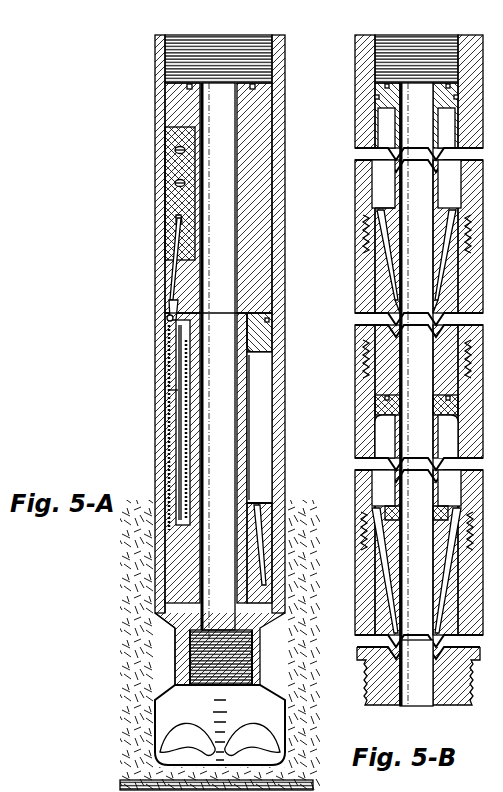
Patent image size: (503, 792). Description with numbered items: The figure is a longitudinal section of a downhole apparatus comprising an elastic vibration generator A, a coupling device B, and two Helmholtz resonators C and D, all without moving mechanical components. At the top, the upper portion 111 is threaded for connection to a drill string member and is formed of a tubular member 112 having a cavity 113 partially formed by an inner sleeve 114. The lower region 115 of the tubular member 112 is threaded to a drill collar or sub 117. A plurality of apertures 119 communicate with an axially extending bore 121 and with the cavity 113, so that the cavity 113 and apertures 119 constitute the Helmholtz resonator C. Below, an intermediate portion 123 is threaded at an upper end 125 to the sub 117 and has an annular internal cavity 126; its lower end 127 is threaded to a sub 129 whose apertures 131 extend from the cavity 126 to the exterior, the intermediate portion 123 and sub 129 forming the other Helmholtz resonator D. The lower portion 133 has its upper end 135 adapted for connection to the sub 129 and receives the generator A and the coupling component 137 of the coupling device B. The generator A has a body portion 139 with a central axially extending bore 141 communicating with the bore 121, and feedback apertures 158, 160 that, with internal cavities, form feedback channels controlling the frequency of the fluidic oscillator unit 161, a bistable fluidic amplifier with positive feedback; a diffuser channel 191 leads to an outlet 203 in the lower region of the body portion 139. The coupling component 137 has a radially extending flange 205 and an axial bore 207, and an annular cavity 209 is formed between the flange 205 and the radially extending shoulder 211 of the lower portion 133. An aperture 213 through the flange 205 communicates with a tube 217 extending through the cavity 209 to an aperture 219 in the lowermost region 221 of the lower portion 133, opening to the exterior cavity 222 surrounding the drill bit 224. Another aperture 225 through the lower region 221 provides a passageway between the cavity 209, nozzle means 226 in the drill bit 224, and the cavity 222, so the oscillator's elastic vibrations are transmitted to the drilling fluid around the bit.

In FIG. 5-A, the upper end 135 is at (168, 38).
In FIG. 5-A, the central axially extending bore 141 is at (222, 100).
In FIG. 5-A, the lower portion 133 is at (163, 88).
In FIG. 5-A, the body portion 139 is at (182, 106).
In FIG. 5-A, the elastic vibration generator A is at (170, 117).
In FIG. 5-A, the aperture 158 is at (176, 150).
In FIG. 5-A, the aperture 160 is at (176, 183).
In FIG. 5-A, the fluidic oscillator unit 161 is at (176, 212).
In FIG. 5-A, the diffuser channel 191 is at (175, 248).
In FIG. 5-A, the outlet 203 is at (172, 292).
In FIG. 5-A, the aperture 213 is at (170, 318).
In FIG. 5-A, the tube 217 is at (180, 369).
In FIG. 5-A, the coupling device B is at (176, 390).
In FIG. 5-A, the axial bore 207 is at (184, 422).
In FIG. 5-A, the coupling component 137 is at (186, 465).
In FIG. 5-A, the nozzle means 226 is at (268, 324).
In FIG. 5-A, the radially extending flange 205 is at (260, 345).
In FIG. 5-A, the annular cavity 209 is at (262, 400).
In FIG. 5-A, the radially extending shoulder 211 is at (260, 502).
In FIG. 5-A, the aperture 225 is at (265, 525).
In FIG. 5-A, the axially extending bore 121 is at (215, 575).
In FIG. 5-B, the axially extending bore 121 is at (420, 115).
In FIG. 5-A, the aperture 219 is at (180, 586).
In FIG. 5-A, the lowermost region 221 is at (172, 612).
In FIG. 5-A, the exterior cavity 222 is at (166, 655).
In FIG. 5-A, the drill bit 224 is at (182, 708).
In FIG. 5-B, the upper portion 111 is at (375, 42).
In FIG. 5-B, the tubular member 112 is at (365, 88).
In FIG. 5-B, the cavity 113 is at (380, 130).
In FIG. 5-B, the inner sleeve 114 is at (398, 162).
In FIG. 5-B, the Helmholtz resonator C is at (380, 185).
In FIG. 5-B, the lower region 115 is at (372, 222).
In FIG. 5-B, the drill collar or sub 117 is at (374, 278).
In FIG. 5-B, the apertures 119 is at (380, 295).
In FIG. 5-B, the upper end 125 is at (376, 365).
In FIG. 5-B, the intermediate portion 123 is at (374, 412).
In FIG. 5-B, the annular internal cavity 126 is at (372, 443).
In FIG. 5-B, the Helmholtz resonator D is at (380, 467).
In FIG. 5-B, the lower end 127 is at (372, 518).
In FIG. 5-B, the sub 129 is at (376, 563).
In FIG. 5-B, the apertures 131 is at (378, 600).